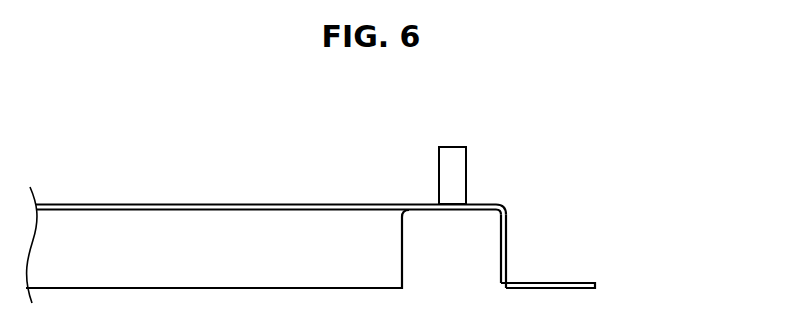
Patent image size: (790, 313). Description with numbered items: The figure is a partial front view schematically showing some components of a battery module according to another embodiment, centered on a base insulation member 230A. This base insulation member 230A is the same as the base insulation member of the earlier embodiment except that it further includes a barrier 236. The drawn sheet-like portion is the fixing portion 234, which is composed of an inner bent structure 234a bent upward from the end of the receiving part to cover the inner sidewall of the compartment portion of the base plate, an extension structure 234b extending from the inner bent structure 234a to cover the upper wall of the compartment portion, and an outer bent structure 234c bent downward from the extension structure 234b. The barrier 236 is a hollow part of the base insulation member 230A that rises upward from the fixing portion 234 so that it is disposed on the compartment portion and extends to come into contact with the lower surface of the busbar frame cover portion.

The base insulation member 230A is at (165, 156).
The barrier 236 is at (450, 147).
The fixing portion 234 is at (379, 227).
The inner bent structure 234a is at (486, 202).
The extension structure 234b is at (505, 244).
The outer bent structure 234c is at (581, 269).